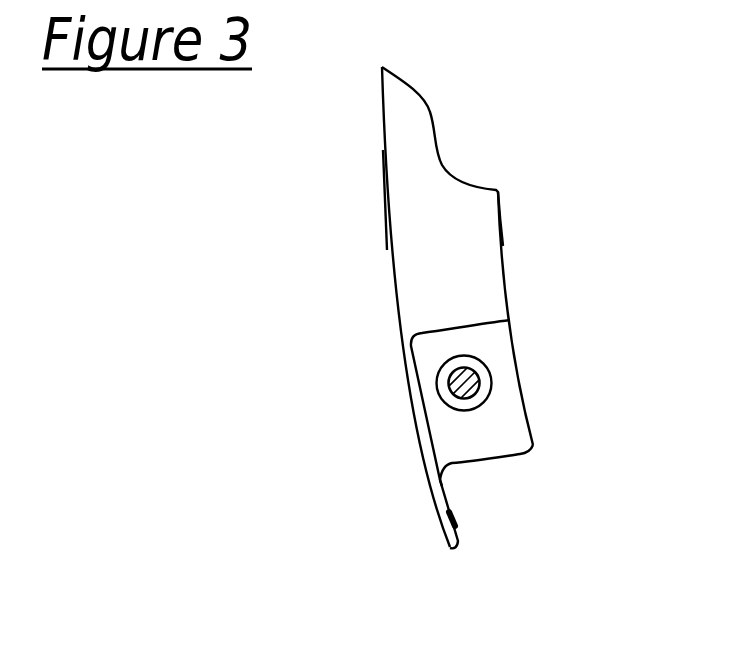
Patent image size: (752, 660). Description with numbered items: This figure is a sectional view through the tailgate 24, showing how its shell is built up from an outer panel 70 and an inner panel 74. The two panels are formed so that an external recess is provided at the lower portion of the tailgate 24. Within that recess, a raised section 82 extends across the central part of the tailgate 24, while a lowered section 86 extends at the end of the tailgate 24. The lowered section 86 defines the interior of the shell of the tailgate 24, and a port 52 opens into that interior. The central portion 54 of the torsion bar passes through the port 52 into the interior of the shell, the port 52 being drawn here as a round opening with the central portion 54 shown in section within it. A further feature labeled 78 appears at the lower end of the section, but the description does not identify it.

The tailgate 24 is at (468, 144).
The inner panel 74 is at (504, 246).
The outer panel 70 is at (385, 211).
The central portion 54 is at (480, 382).
The port 52 is at (448, 381).
The raised section 82 is at (514, 423).
The lowered section 86 is at (504, 490).
The tab 78 is at (458, 527).